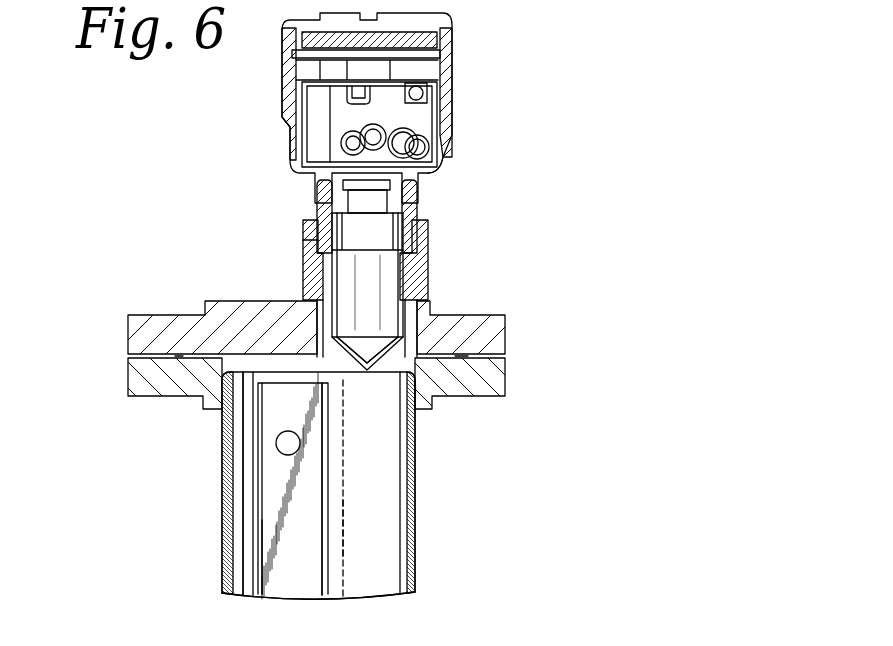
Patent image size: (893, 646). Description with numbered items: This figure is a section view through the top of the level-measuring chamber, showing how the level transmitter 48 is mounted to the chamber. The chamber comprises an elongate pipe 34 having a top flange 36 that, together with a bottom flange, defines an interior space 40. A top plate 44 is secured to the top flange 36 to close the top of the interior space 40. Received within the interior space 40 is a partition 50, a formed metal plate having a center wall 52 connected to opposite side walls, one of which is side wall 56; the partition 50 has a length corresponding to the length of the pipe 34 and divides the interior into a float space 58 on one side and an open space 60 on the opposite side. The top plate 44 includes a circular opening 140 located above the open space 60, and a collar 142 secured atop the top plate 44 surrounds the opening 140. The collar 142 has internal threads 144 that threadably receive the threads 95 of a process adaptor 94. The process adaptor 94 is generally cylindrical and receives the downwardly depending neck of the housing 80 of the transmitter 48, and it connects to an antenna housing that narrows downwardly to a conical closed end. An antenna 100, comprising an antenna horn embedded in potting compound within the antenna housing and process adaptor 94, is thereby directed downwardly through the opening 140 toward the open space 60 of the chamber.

The elongate pipe 34 is at (415, 497).
The top flange 36 is at (470, 365).
The interior space 40 is at (376, 580).
The top plate 44 is at (485, 325).
The level transmitter 48 is at (472, 84).
The partition 50 is at (330, 492).
The center wall 52 is at (328, 420).
The side wall 56 is at (275, 497).
The float space 58 is at (315, 579).
The open space 60 is at (381, 559).
The housing 80 is at (452, 161).
The process adaptor 94 is at (415, 193).
The threads 95 is at (302, 232).
The antenna 100 is at (372, 375).
The circular opening 140 is at (410, 330).
The collar 142 is at (426, 262).
The internal threads 144 is at (302, 258).